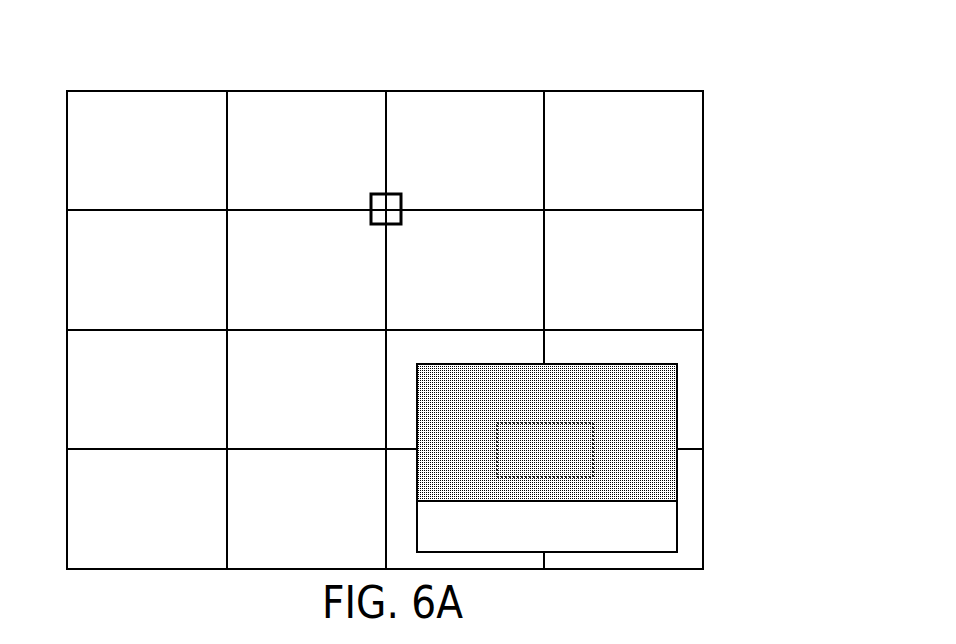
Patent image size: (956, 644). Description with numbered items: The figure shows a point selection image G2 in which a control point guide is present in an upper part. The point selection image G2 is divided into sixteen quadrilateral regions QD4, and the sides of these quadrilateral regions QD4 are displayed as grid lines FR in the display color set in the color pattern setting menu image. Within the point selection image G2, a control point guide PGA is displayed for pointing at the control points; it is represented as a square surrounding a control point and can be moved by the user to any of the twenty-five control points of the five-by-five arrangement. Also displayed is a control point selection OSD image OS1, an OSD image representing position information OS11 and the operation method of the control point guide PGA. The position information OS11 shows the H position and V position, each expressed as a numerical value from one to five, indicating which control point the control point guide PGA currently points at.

The point selection image G2 is at (633, 63).
The grid lines FR is at (543, 113).
The quadrilateral region QD4 is at (690, 150).
The control point guide PGA is at (387, 195).
The control point selection OSD image OS1 is at (680, 397).
The position information OS11 is at (593, 449).